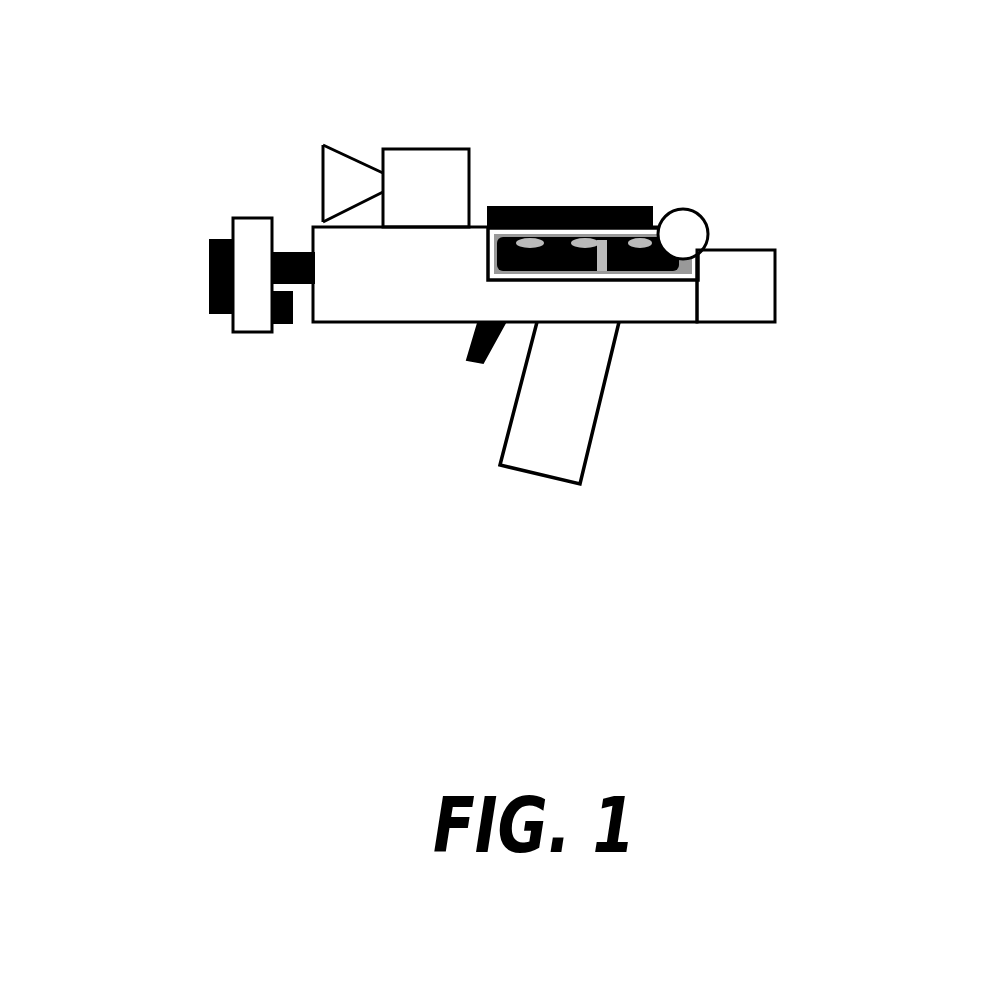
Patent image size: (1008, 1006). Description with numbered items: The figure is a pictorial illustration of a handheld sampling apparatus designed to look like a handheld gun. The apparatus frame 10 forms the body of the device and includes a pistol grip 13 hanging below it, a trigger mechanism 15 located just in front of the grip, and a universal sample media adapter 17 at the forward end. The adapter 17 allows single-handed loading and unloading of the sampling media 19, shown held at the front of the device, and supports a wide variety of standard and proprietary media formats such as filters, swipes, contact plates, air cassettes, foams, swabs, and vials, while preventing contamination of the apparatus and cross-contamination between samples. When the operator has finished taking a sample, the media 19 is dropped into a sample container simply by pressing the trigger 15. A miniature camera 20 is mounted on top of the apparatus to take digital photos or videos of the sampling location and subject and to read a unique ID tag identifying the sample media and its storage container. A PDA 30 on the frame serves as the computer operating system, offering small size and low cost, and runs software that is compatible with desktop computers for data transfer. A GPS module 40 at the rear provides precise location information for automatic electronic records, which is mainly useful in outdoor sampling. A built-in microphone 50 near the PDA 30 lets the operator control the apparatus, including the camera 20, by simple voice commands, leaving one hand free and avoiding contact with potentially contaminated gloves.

The apparatus frame 10 is at (410, 295).
The pistol grip 13 is at (562, 468).
The trigger mechanism 15 is at (399, 421).
The universal sample media adapter 17 is at (211, 161).
The sampling media 19 is at (149, 266).
The miniature camera 20 is at (429, 113).
The PDA 30 is at (630, 362).
The GPS module 40 is at (788, 333).
The built-in microphone 50 is at (745, 160).